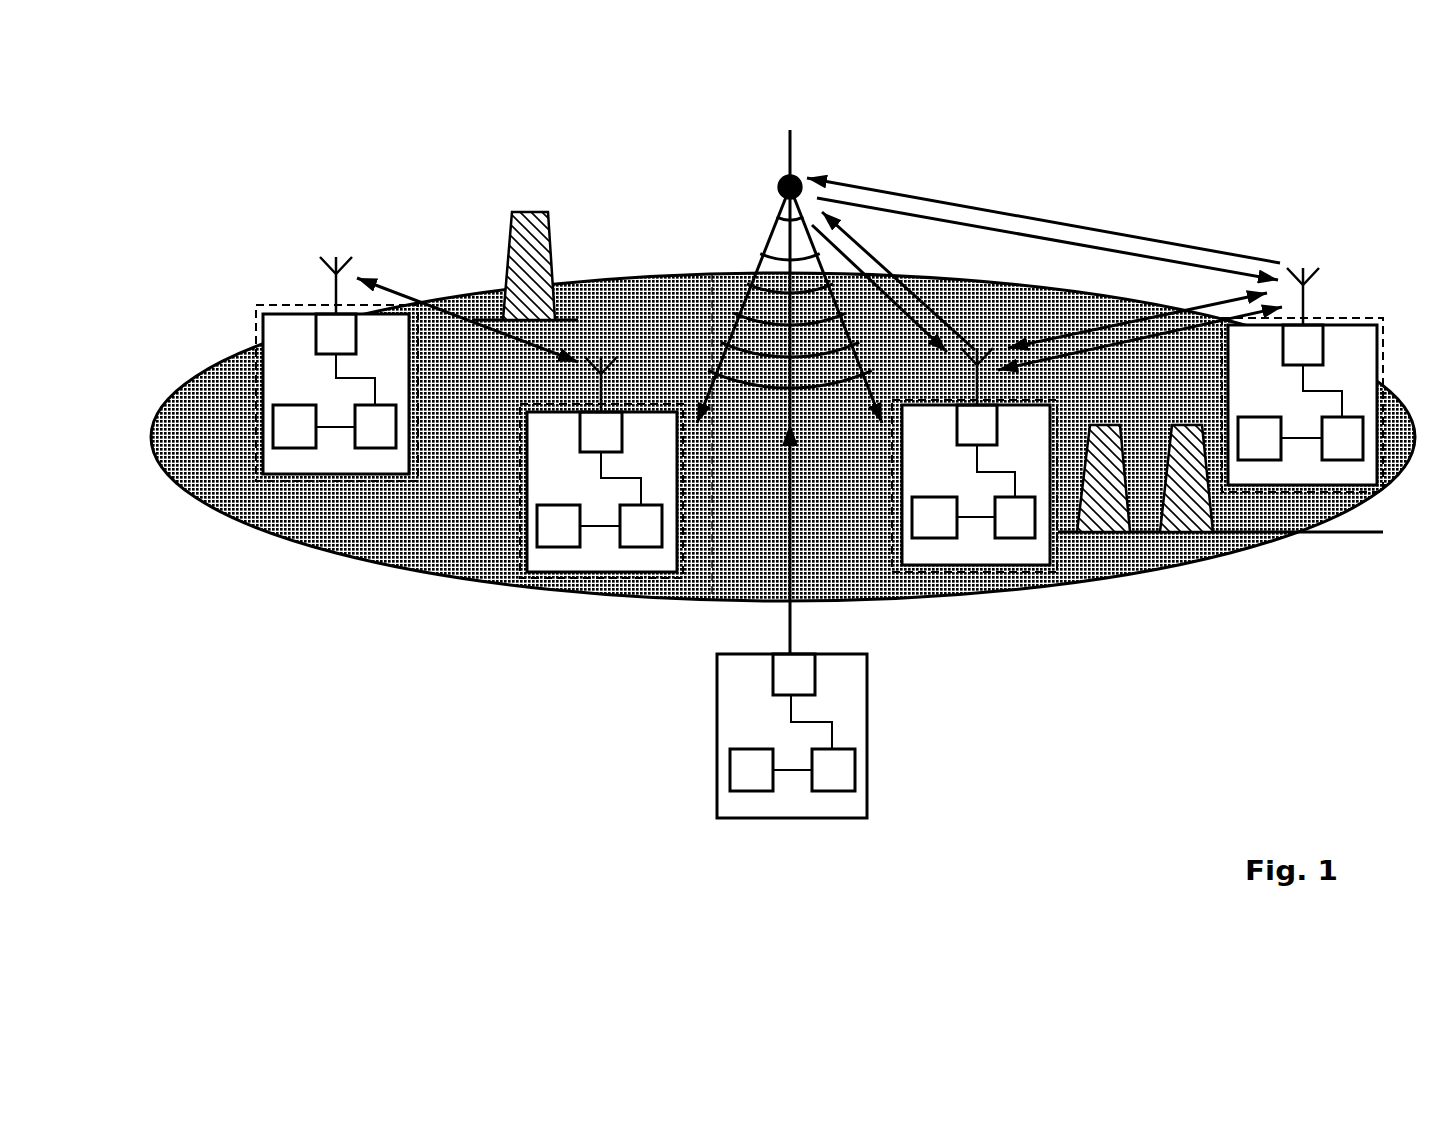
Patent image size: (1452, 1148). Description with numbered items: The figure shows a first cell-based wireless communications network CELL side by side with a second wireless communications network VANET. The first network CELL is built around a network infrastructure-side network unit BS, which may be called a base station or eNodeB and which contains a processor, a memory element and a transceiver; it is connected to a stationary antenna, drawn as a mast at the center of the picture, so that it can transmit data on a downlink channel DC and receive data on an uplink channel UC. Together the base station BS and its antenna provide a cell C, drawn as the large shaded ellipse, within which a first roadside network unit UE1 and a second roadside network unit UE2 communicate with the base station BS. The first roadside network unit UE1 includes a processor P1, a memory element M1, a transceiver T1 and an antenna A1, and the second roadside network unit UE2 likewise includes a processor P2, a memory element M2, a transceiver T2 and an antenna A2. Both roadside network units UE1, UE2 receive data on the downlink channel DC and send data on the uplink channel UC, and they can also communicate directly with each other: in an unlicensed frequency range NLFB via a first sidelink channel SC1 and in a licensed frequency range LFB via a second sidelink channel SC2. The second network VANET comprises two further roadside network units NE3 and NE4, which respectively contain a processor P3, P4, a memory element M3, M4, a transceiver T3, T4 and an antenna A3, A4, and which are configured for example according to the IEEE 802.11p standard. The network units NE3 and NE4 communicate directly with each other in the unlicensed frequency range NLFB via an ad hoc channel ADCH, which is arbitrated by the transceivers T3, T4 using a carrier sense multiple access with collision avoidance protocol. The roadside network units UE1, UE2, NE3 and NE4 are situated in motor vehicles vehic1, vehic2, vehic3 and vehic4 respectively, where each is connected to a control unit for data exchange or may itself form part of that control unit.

The first cell-based wireless communications network CELL is at (1097, 176).
The cell C is at (655, 272).
The second wireless communications network VANET is at (362, 216).
The unlicensed frequency range NLFB is at (528, 211).
The licensed frequency range LFB is at (1187, 525).
The network infrastructure-side network unit BS is at (800, 818).
The uplink channel UC is at (902, 192).
The downlink channel DC is at (990, 230).
The first sidelink channel SC1 is at (1220, 303).
The second sidelink channel SC2 is at (1140, 343).
The ad hoc channel ADCH is at (385, 303).
The motor vehicle vehic3 is at (374, 478).
The roadside network unit NE3 is at (268, 333).
The transceiver T3 is at (336, 334).
The memory element M3 is at (294, 426).
The processor P3 is at (375, 426).
The antenna A3 is at (330, 299).
The motor vehicle vehic4 is at (588, 578).
The roadside network unit NE4 is at (652, 563).
The transceiver T4 is at (601, 432).
The memory element M4 is at (558, 526).
The processor P4 is at (641, 526).
The antenna A4 is at (610, 392).
The first roadside network unit UE1 is at (955, 566).
The motor vehicle vehic1 is at (1008, 573).
The transceiver T1 is at (977, 425).
The memory element M1 is at (934, 517).
The processor P1 is at (1015, 517).
The antenna A1 is at (975, 373).
The motor vehicle vehic2 is at (1336, 493).
The second roadside network unit UE2 is at (1280, 476).
The transceiver T2 is at (1303, 345).
The memory element M2 is at (1259, 438).
The processor P2 is at (1342, 438).
The antenna A2 is at (1312, 301).